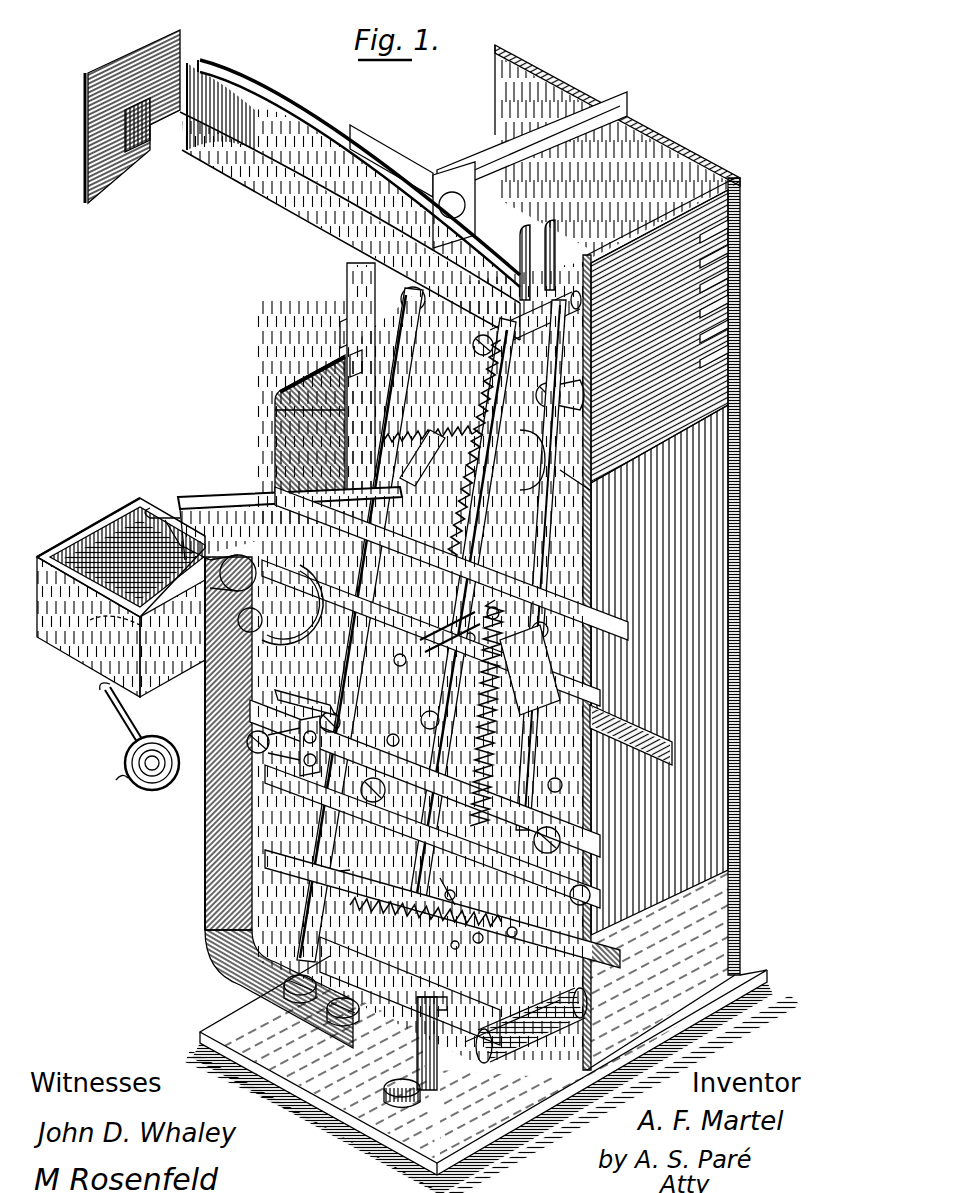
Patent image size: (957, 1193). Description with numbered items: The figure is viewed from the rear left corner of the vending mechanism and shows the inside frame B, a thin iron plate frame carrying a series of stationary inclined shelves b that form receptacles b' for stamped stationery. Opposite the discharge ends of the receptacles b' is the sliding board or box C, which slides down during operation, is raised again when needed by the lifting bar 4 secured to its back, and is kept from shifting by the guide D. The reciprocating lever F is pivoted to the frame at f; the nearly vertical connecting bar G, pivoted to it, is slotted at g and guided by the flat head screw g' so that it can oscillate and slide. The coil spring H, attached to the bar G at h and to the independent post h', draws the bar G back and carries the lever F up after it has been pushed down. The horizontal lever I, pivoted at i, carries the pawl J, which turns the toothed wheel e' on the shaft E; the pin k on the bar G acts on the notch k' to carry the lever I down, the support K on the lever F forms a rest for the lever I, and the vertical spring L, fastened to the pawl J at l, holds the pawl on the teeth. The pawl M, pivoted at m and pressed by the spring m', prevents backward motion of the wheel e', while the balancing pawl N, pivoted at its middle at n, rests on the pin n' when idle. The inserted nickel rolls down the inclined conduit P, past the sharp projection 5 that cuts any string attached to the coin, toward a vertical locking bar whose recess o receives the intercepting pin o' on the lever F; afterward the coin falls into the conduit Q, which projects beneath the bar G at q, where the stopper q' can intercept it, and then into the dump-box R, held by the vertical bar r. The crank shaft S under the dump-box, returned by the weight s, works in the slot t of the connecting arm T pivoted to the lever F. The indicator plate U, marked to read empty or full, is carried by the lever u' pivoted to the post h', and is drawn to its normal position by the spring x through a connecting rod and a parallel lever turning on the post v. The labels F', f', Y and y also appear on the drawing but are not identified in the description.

The inside frame B is at (642, 557).
The stationary inclined shelves b is at (741, 258).
The receptacles b' is at (745, 303).
The independent post h' is at (488, 219).
The indicator plate U is at (135, 182).
The inclined conduit P is at (292, 98).
The lever u' is at (350, 226).
The small projection 5 is at (400, 303).
The sliding board or box C is at (275, 445).
The stopper q' is at (294, 368).
The spring x is at (275, 395).
The conduit Q is at (226, 500).
The shaft E is at (186, 503).
The dump-box R is at (90, 665).
The slot t is at (117, 517).
The crank shaft S is at (112, 718).
The connecting arm T is at (208, 777).
The weight s is at (124, 779).
The frame column F' is at (251, 802).
The vertical bar r is at (206, 870).
The screws Y is at (331, 1000).
The roller y is at (560, 1022).
The reciprocating lever F is at (512, 1040).
The vertical spring L is at (462, 611).
The spring attachment point h is at (475, 457).
The toothed wheel e' is at (391, 509).
The slot g is at (548, 240).
The flat head screw or pin g' is at (530, 242).
The bar f' is at (646, 565).
The coil spring H is at (590, 490).
The conduit projection point q is at (655, 496).
The connecting rod or flat bar G is at (590, 577).
The pawl M is at (650, 632).
The pivot m is at (556, 609).
The vertical spring m' is at (644, 643).
The lifting bar 4 is at (672, 745).
The additional pawl N is at (595, 822).
The pivot n is at (487, 713).
The pin or post n' is at (560, 771).
The pivot i is at (592, 862).
The pivot f is at (677, 889).
The pawl J is at (605, 956).
The support K is at (302, 770).
The horizontal lever I is at (278, 694).
The guide D is at (385, 635).
The pin or post k is at (403, 801).
The notch k' is at (422, 888).
The spring attachment point l is at (446, 880).
The post v is at (417, 911).
The rectangular recess o is at (473, 941).
The intercepting pin o' is at (505, 939).